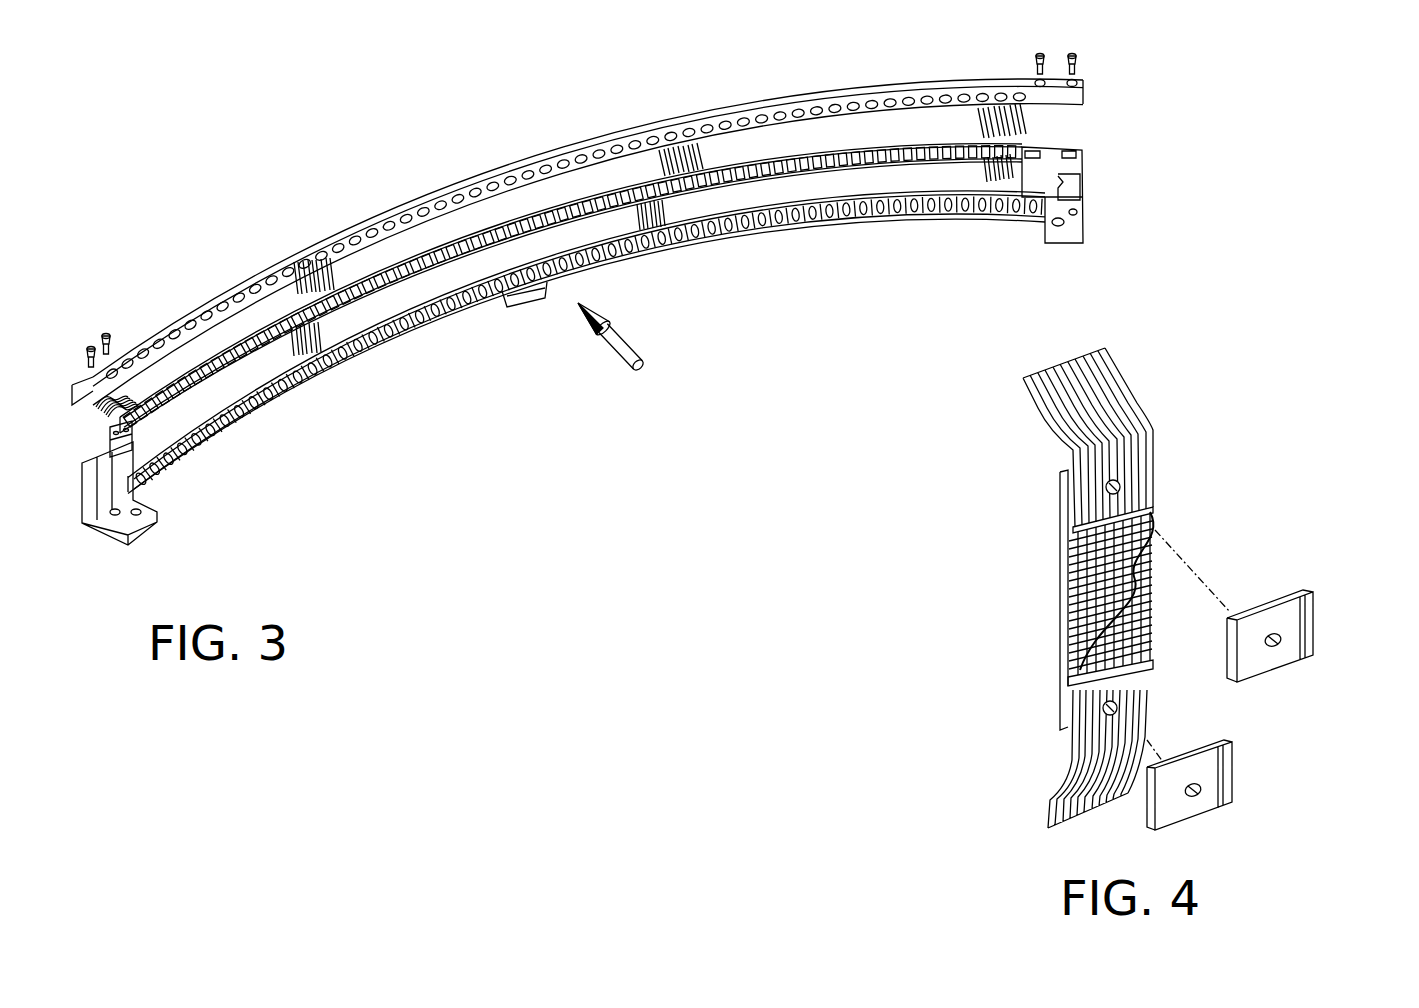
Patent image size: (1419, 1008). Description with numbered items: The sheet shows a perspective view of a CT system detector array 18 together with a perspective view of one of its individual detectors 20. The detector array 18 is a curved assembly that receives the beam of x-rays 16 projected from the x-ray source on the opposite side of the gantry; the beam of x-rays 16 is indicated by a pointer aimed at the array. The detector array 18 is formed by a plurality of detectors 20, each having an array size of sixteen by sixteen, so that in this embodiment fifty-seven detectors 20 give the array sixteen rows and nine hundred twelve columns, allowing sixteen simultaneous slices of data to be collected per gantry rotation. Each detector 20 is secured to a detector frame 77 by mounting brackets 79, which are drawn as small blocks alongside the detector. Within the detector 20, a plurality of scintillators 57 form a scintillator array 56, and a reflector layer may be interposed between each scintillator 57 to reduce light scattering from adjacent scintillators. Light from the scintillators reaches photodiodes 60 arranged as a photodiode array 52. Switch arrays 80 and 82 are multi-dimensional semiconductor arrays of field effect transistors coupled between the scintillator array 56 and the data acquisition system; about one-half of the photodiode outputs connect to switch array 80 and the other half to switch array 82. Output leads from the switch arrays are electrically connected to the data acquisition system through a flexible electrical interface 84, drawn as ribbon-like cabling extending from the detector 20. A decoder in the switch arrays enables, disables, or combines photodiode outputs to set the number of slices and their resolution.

In FIG. 3, the beam of x-rays 16 is at (617, 350).
In FIG. 3, the detector array 18 is at (457, 169).
In FIG. 3, the detector 20 is at (288, 268).
In FIG. 4, the detector 20 is at (1180, 589).
In FIG. 3, the photodiode array 52 is at (1030, 141).
In FIG. 4, the photodiode array 52 is at (1060, 668).
In FIG. 3, the scintillator array 56 is at (906, 173).
In FIG. 4, the scintillator array 56 is at (1168, 581).
In FIG. 4, the scintillator 57 is at (1153, 645).
In FIG. 4, the photodiode 60 is at (1068, 600).
In FIG. 3, the detector frame 77 is at (108, 433).
In FIG. 4, the mounting bracket 79 is at (1212, 762).
In FIG. 4, the switch array 80 is at (1072, 525).
In FIG. 4, the switch array 82 is at (1140, 672).
In FIG. 4, the flexible electrical interface 84 is at (1145, 418).